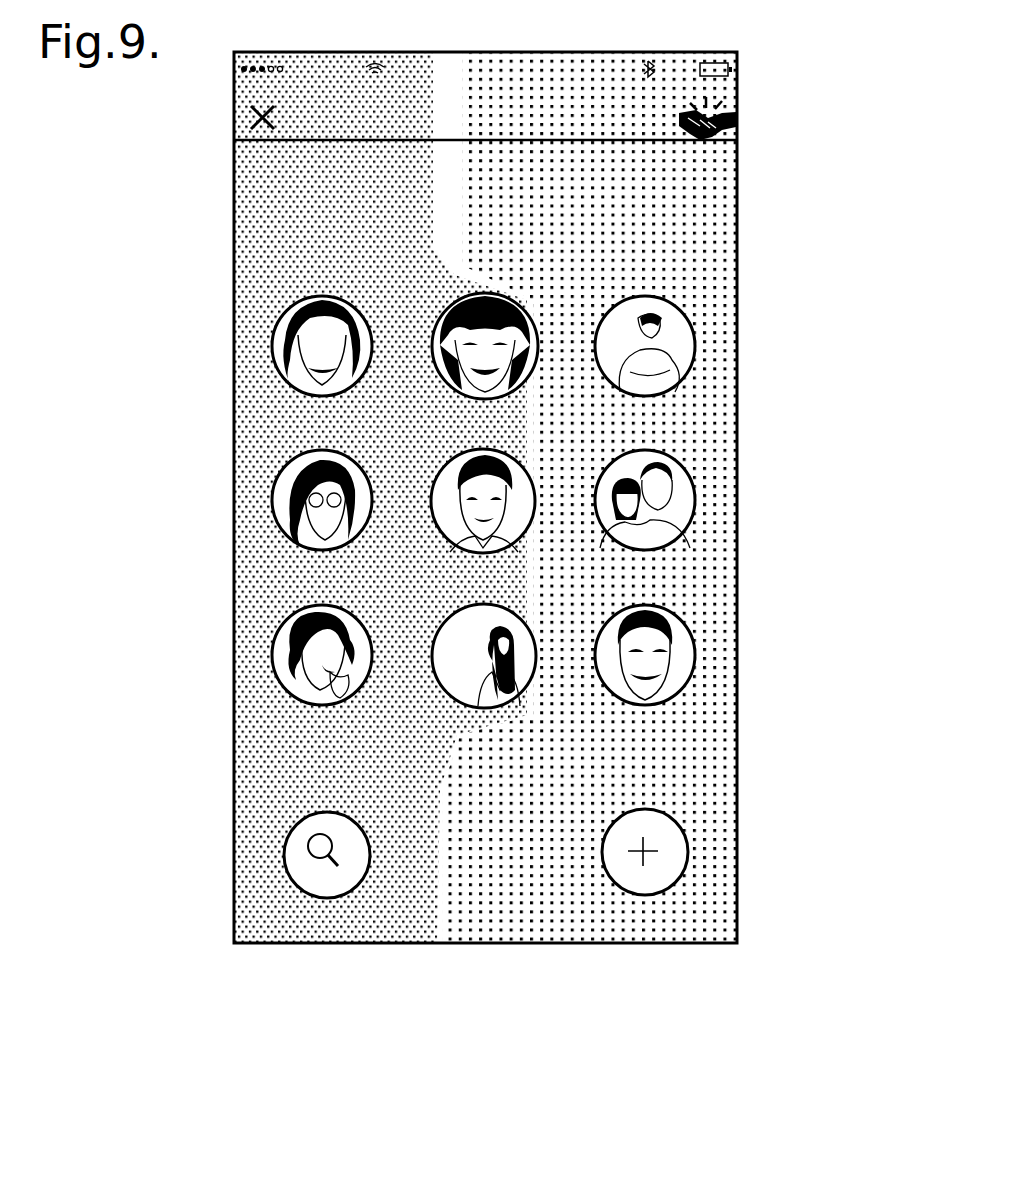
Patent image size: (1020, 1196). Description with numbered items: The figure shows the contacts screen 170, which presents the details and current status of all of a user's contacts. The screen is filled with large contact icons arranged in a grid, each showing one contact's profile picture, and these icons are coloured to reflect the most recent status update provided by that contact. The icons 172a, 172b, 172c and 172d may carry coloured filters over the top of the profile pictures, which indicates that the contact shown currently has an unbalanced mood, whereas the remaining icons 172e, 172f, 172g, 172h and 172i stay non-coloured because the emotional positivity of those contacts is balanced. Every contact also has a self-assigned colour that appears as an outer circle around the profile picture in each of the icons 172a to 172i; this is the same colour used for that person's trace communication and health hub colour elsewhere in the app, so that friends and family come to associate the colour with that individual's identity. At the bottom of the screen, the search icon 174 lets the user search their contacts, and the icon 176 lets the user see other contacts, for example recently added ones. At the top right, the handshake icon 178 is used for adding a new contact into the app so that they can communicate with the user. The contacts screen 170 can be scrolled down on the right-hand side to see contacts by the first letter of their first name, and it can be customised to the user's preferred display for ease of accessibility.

The contacts screen 170 is at (673, 229).
The handshake icon 178 is at (719, 118).
The contact icon 172a is at (290, 650).
The contact icon 172b is at (470, 682).
The contact icon 172c is at (680, 662).
The contact icon 172d is at (688, 505).
The contact icon 172e is at (462, 525).
The contact icon 172f is at (271, 506).
The contact icon 172g is at (271, 355).
The contact icon 172h is at (437, 307).
The contact icon 172i is at (672, 348).
The search icon 174 is at (337, 871).
The other contacts icon 176 is at (652, 870).